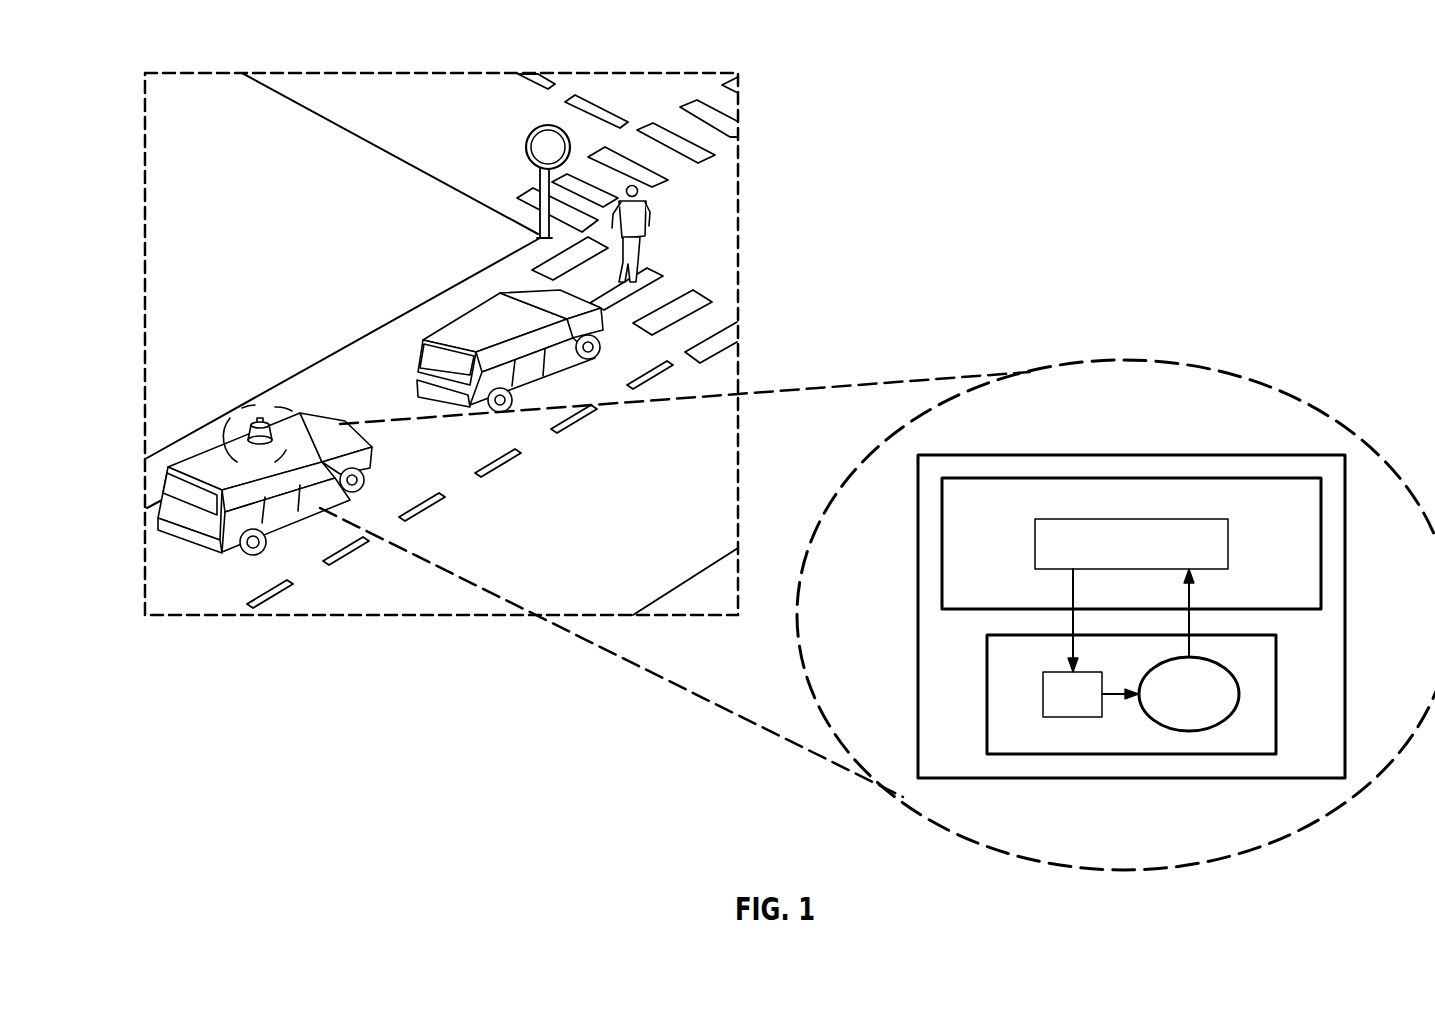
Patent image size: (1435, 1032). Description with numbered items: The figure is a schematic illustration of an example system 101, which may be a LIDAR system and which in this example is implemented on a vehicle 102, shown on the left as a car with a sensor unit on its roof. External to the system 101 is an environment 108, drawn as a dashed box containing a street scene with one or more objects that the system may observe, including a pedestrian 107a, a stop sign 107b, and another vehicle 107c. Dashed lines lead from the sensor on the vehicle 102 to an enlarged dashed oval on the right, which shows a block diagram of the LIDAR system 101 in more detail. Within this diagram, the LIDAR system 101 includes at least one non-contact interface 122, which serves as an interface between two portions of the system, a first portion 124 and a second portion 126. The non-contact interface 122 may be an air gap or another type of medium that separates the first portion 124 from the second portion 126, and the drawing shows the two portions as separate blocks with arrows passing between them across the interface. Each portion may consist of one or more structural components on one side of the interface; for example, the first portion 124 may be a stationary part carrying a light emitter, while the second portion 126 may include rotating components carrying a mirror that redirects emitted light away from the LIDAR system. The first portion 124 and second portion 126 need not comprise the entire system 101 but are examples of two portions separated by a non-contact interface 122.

The LIDAR system 101 is at (262, 418).
The vehicle 102 is at (160, 504).
The pedestrian 107a is at (638, 195).
The stop sign 107b is at (547, 125).
The another vehicle 107c is at (478, 318).
The environment 108 is at (672, 102).
The non-contact interface 122 is at (974, 627).
The first portion 124 is at (1015, 478).
The second portion 126 is at (1128, 755).